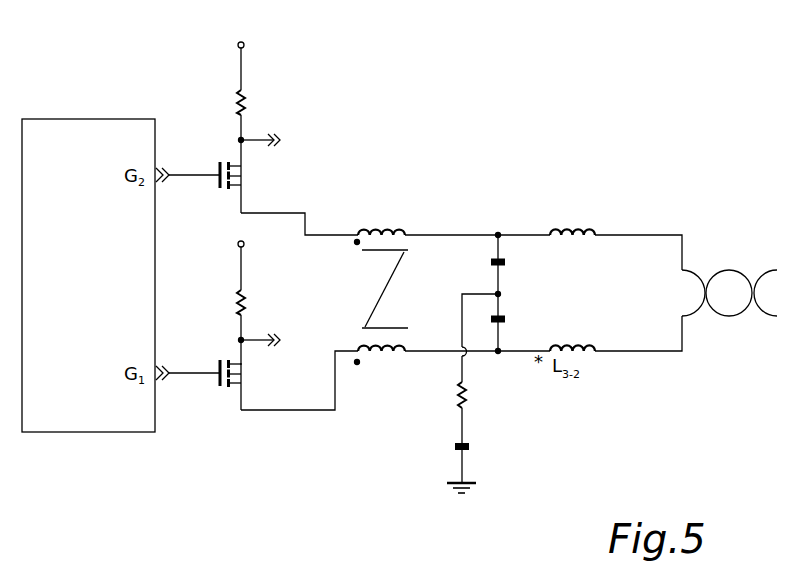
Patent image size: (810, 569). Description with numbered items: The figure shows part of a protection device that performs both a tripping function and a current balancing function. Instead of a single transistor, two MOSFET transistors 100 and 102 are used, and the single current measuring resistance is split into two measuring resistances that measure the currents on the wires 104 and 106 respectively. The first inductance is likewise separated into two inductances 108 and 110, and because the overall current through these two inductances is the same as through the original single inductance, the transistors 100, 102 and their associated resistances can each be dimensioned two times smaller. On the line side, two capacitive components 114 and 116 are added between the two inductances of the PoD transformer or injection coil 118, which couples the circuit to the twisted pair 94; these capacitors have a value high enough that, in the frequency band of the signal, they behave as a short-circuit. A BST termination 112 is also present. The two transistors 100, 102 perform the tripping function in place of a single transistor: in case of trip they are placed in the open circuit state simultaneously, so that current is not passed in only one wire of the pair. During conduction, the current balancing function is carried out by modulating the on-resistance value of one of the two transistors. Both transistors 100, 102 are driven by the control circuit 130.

The control circuit 130 is at (97, 92).
The wire 106 is at (241, 70).
The transistor M2 102 is at (210, 162).
The wire 104 is at (241, 268).
The transistor M1 100 is at (232, 406).
The inductance L1_2 110 is at (405, 232).
The inductance L1_1 108 is at (400, 354).
The capacitive component 114 is at (505, 261).
The capacitive component 116 is at (505, 319).
The BST termination 112 is at (485, 373).
The injection coil 118 is at (645, 235).
The twisted pair 94 is at (733, 270).